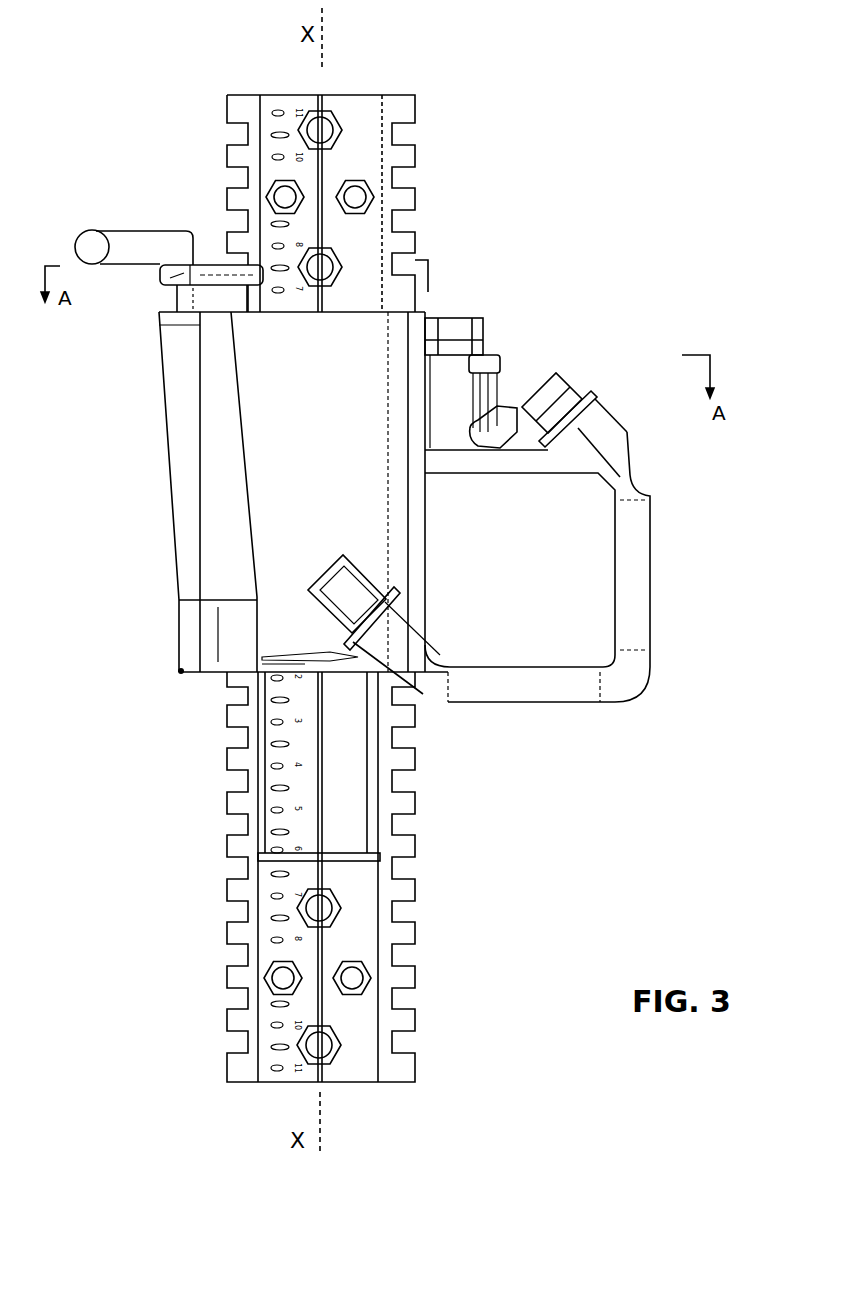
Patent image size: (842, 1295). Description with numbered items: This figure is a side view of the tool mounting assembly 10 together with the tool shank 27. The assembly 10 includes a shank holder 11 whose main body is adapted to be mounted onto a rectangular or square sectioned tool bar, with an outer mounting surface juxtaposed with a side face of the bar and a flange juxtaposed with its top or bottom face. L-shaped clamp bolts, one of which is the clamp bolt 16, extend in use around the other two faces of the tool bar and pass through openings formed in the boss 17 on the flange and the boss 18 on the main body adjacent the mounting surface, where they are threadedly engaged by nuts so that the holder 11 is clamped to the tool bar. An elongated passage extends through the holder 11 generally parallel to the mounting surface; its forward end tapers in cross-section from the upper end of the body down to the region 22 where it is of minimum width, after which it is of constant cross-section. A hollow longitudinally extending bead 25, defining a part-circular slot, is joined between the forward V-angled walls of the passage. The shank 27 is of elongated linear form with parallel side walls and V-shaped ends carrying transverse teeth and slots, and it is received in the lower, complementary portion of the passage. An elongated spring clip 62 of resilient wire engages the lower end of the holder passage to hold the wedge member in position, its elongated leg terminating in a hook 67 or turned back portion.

The tool mounting assembly 10 is at (532, 304).
The shank holder 11 is at (188, 482).
The L-shaped clamp bolt 16 is at (645, 566).
The boss 17 is at (610, 413).
The boss 18 is at (398, 663).
The region of minimum width 22 is at (188, 593).
The hollow longitudinally extending bead 25 is at (163, 408).
The shank 27 is at (380, 856).
The spring clip 62 is at (148, 216).
The hook 67 is at (182, 676).